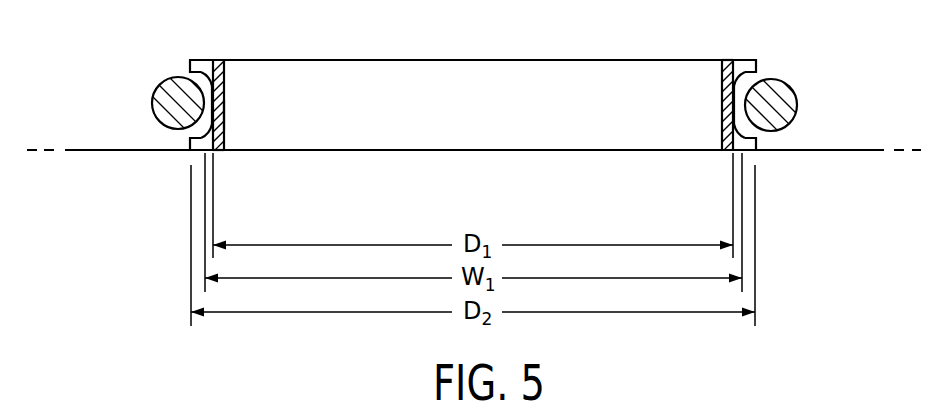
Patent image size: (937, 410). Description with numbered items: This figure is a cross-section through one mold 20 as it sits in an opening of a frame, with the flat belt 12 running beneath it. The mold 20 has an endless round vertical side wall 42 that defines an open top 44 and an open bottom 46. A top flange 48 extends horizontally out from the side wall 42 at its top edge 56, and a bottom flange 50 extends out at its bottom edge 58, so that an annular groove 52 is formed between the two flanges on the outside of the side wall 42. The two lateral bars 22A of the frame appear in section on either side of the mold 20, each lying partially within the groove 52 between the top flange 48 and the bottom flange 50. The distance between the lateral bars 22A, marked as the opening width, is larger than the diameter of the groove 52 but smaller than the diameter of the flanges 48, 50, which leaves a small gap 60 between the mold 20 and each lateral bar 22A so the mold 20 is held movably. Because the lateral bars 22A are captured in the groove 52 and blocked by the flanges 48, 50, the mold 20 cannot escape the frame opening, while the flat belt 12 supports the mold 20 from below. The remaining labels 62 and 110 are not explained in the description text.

The belt 12 is at (83, 140).
The mold 20 is at (471, 105).
The lateral bar 22A is at (165, 92).
The side wall 42 is at (226, 84).
The open top 44 is at (398, 68).
The open bottom 46 is at (374, 131).
The top flange 48 is at (198, 68).
The bottom flange 50 is at (185, 140).
The groove 52 is at (210, 123).
The top edge 56 is at (730, 48).
The bottom edge 58 is at (224, 161).
The gap 60 is at (207, 82).
The central bore 62 is at (444, 117).
The wall inner face 110 is at (237, 118).